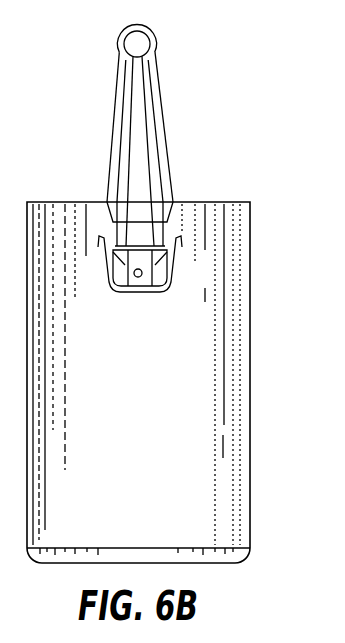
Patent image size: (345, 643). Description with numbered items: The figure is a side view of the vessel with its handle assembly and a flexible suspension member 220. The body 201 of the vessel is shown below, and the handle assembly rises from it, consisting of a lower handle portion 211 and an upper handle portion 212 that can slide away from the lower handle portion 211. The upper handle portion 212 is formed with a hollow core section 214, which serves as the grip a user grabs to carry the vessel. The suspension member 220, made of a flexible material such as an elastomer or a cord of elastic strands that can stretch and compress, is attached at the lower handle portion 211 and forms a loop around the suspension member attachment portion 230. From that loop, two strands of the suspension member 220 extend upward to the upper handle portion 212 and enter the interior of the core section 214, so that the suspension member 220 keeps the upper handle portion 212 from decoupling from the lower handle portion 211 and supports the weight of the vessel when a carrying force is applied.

The body 201 is at (153, 418).
The lower handle portion 211 is at (132, 237).
The upper handle portion 212 is at (113, 86).
The hollow core section 214 is at (146, 44).
The suspension member 220 is at (152, 130).
The suspension member attachment portion 230 is at (173, 247).